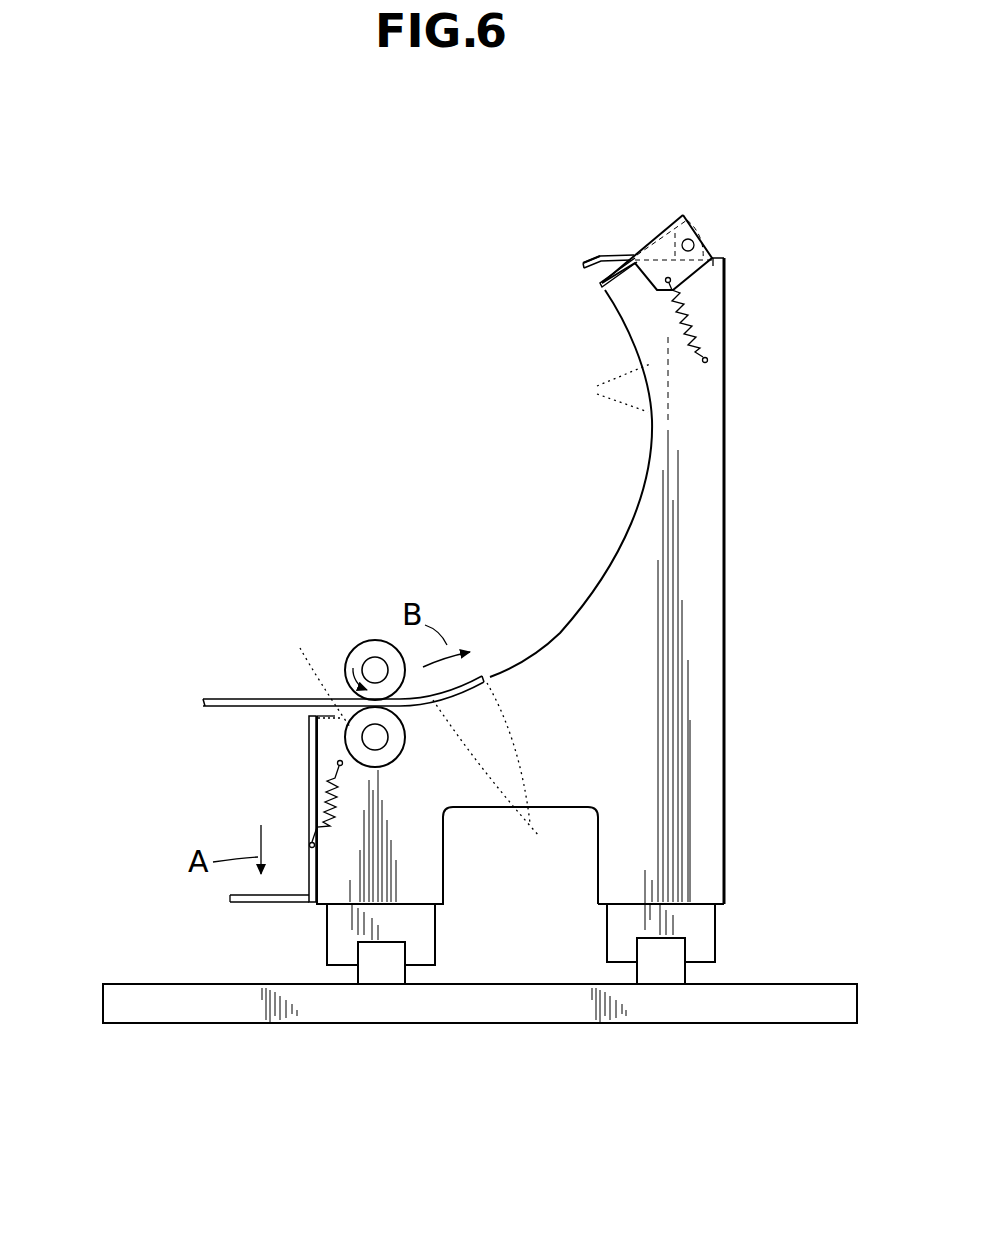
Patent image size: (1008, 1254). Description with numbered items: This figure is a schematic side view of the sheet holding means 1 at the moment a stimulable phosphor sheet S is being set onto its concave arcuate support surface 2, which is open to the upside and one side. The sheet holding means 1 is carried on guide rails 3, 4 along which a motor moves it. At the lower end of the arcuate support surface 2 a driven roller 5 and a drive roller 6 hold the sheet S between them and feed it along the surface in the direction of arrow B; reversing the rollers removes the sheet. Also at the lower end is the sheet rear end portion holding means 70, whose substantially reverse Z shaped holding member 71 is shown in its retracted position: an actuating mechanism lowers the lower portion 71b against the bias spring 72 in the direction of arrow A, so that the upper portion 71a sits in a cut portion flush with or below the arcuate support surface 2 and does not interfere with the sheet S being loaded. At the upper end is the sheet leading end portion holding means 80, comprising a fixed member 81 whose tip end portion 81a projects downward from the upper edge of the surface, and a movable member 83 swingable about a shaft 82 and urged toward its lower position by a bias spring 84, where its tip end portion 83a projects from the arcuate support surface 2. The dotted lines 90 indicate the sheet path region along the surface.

The sheet holding means 1 is at (710, 543).
The arcuate support surface 2 is at (612, 560).
The guide rail 3 is at (384, 967).
The guide rail 4 is at (664, 970).
The driven roller 5 is at (382, 763).
The drive roller 6 is at (370, 650).
The sheet rear end portion holding means 70 is at (271, 796).
The holding member 71 is at (308, 792).
The upper portion 71a is at (320, 673).
The lower portion 71b is at (270, 900).
The bias spring 72 is at (320, 800).
The sheet leading end portion holding means 80 is at (652, 263).
The fixed member 81 is at (590, 260).
The tip end portion 81a is at (581, 267).
The shaft 82 is at (697, 245).
The movable member 83 is at (687, 222).
The tip end portion 83a is at (606, 287).
The bias spring 84 is at (692, 320).
The sheet path 90 is at (541, 611).
The stimulable phosphor sheet S is at (268, 698).